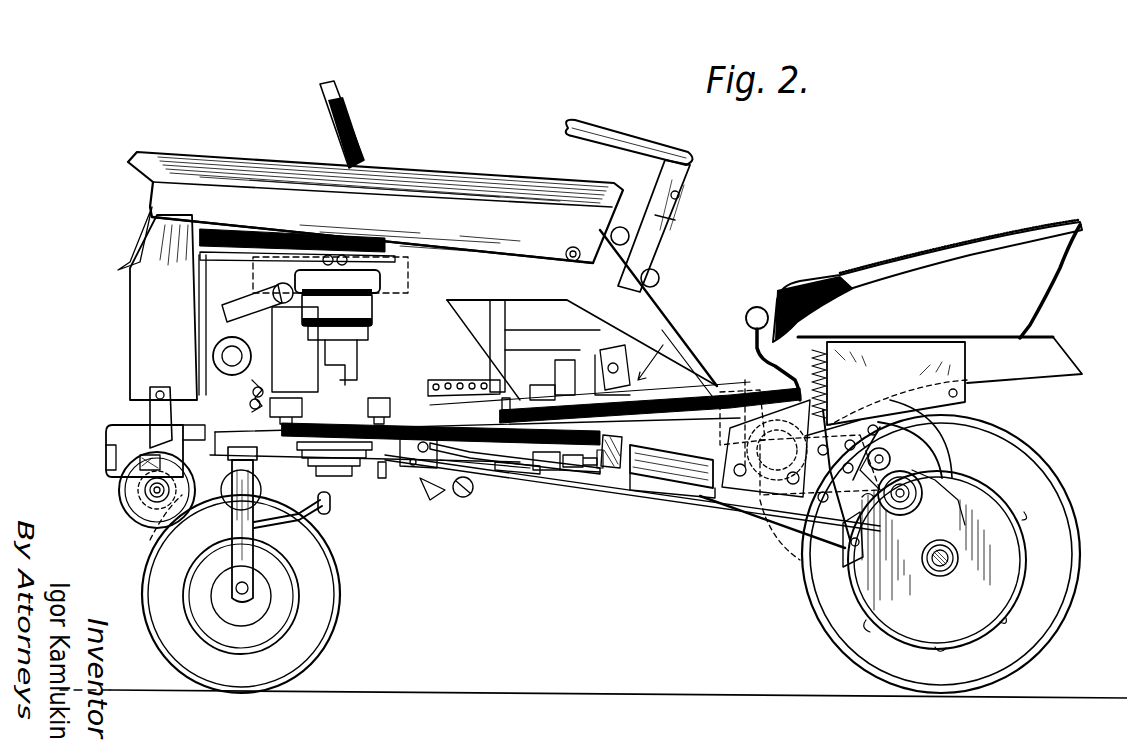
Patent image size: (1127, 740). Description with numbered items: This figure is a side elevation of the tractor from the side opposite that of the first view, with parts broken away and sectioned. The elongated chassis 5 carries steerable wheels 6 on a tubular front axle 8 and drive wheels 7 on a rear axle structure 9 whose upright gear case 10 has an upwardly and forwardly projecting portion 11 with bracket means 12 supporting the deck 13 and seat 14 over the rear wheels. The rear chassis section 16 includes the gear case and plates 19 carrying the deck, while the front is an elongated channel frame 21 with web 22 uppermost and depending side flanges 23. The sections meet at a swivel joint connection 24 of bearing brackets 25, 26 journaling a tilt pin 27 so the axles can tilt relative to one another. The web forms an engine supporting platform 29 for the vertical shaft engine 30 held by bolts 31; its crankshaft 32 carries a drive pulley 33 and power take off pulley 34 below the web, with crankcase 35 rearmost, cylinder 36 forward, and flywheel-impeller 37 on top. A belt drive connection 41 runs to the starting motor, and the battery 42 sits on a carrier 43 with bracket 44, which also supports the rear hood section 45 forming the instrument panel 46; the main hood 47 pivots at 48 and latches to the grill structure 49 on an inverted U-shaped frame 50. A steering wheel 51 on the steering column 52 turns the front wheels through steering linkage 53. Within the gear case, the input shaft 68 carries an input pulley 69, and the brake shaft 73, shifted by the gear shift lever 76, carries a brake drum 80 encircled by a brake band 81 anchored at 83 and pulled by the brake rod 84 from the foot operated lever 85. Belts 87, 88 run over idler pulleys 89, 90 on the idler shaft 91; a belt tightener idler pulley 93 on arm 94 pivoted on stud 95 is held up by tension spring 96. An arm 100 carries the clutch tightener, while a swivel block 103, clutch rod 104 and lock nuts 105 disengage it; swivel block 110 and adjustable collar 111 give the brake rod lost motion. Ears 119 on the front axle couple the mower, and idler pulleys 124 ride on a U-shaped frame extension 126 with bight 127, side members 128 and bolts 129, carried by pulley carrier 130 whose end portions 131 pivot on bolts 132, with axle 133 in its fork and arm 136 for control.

The chassis 5 is at (734, 262).
The steerable wheels 6 is at (142, 590).
The drive wheels 7 is at (1028, 650).
The front axle 8 is at (226, 495).
The rear axle structure 9 is at (1045, 594).
The gear case 10 is at (1015, 520).
The upwardly and forwardly projecting portion 11 is at (908, 445).
The bracket means 12 is at (984, 400).
The deck 13 is at (1035, 332).
The seat 14 is at (940, 262).
The rear chassis section 16 is at (768, 550).
The second pair of plates 19 is at (917, 335).
The frame 21 is at (596, 478).
The web 22 is at (670, 345).
The side flanges 23 is at (645, 486).
The swivel joint connection 24 is at (696, 510).
The bearing bracket 25 is at (662, 500).
The bearing bracket 26 is at (752, 530).
The tilt pin 27 is at (620, 484).
The engine supporting platform 29 is at (302, 378).
The internal combustion engine 30 is at (238, 262).
The bolts 31 is at (284, 405).
The crankshaft 32 is at (334, 478).
The V-belt drive pulley 33 is at (300, 448).
The V-belt power take off pulley 34 is at (382, 480).
The crankcase 35 is at (415, 310).
The cylinder 36 is at (212, 362).
The flywheel-impeller 37 is at (392, 240).
The belt drive connection 41 is at (168, 224).
The battery 42 is at (520, 312).
The carrier 43 is at (585, 370).
The bracket 44 is at (490, 318).
The rear hood section 45 is at (472, 254).
The instrument panel 46 is at (660, 280).
The main hood 47 is at (478, 183).
The pivot 48 is at (578, 248).
The grill structure 49 is at (136, 262).
The inverted U-shaped frame 50 is at (248, 395).
The steering wheel 51 is at (630, 120).
The steering column 52 is at (658, 235).
The steering linkage 53 is at (655, 360).
The input shaft 68 is at (892, 460).
The input pulley 69 is at (940, 432).
The brake shaft 73 is at (922, 494).
The gear shift lever 76 is at (750, 308).
The brake drum 80 is at (928, 557).
The brake band 81 is at (960, 500).
The anchor 83 is at (845, 557).
The brake rod 84 is at (820, 540).
The foot operated lever 85 is at (425, 500).
The endless belt 87 is at (466, 398).
The endless belt 88 is at (698, 385).
The idler pulley 89 is at (520, 410).
The idler pulley 90 is at (518, 470).
The idler shaft 91 is at (548, 385).
The belt tightener idler pulley 93 is at (775, 500).
The arm 94 is at (742, 390).
The stud 95 is at (735, 505).
The tension spring 96 is at (815, 360).
The arm 100 is at (495, 482).
The swivel block 103 is at (545, 482).
The clutch rod 104 is at (470, 495).
The lock nuts 105 is at (575, 480).
The swivel block 110 is at (440, 470).
The adjustable collar 111 is at (398, 490).
The ears 119 is at (278, 518).
The idler pulleys 124 is at (120, 497).
The U-shaped frame extension 126 is at (92, 441).
The bight 127 is at (104, 448).
The side members 128 is at (112, 432).
The bolts 129 is at (150, 428).
The pulley carrier 130 is at (140, 462).
The end portions 131 is at (132, 548).
The bolt 132 is at (115, 490).
The axle 133 is at (150, 498).
The arm 136 is at (145, 390).